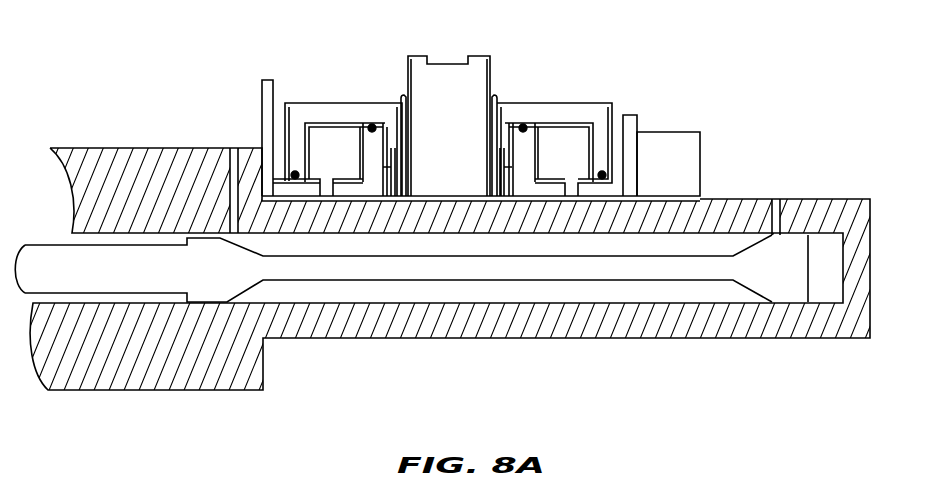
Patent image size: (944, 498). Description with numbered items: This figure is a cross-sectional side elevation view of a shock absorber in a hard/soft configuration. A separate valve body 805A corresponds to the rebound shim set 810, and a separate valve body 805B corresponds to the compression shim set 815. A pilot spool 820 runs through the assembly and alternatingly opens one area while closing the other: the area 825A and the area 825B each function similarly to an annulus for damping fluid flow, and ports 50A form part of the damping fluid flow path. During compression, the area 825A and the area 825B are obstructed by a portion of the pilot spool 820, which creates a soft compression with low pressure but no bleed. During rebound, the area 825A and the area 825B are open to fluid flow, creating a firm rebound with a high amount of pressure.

The ports 50A is at (233, 167).
The valve body 805A is at (560, 105).
The valve body 805B is at (360, 105).
The rebound shim set 810 is at (498, 100).
The compression shim set 815 is at (398, 105).
The pilot spool 820 is at (598, 267).
The area 825A is at (575, 140).
The area 825B is at (323, 140).